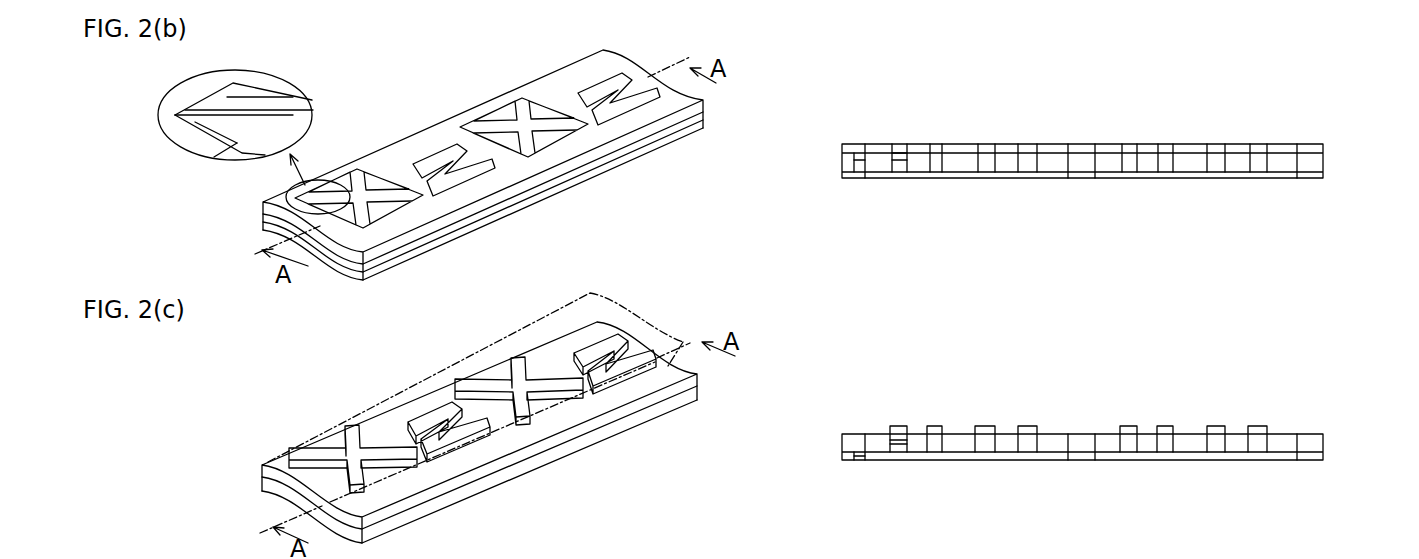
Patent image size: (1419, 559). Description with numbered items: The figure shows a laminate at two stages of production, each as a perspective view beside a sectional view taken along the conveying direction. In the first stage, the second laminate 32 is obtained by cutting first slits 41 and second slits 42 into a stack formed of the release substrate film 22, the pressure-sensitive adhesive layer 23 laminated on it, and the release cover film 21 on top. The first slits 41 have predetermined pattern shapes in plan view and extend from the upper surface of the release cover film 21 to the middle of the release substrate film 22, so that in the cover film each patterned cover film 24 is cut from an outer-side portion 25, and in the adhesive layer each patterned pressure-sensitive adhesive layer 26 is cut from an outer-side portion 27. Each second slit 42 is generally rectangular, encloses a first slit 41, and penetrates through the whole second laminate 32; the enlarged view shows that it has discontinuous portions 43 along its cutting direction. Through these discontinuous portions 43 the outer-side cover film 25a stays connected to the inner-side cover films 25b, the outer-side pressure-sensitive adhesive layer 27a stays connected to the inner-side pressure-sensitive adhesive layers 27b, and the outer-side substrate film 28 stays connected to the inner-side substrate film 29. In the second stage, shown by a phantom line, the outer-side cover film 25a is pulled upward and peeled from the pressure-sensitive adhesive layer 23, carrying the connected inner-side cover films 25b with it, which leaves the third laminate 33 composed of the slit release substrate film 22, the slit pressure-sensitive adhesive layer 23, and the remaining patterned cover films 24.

In FIG. 2B, the release cover film 21 is at (704, 101).
In FIG. 2B, the release substrate film 22 is at (704, 124).
In FIG. 2C, the release substrate film 22 is at (700, 394).
In FIG. 2B, the pressure-sensitive adhesive layer 23 is at (704, 115).
In FIG. 2C, the pressure-sensitive adhesive layer 23 is at (700, 378).
In FIG. 2B, the patterned cover film 24 is at (351, 222).
In FIG. 2C, the patterned cover film 24 is at (358, 425).
In FIG. 2B, the outer-side portion 25 is at (477, 122).
In FIG. 2C, the outer-side portion 25 is at (509, 381).
In FIG. 2B, the outer-side cover film 25a is at (458, 126).
In FIG. 2C, the outer-side cover film 25a is at (436, 425).
In FIG. 2B, the inner-side cover film 25b is at (530, 134).
In FIG. 2C, the inner-side cover film 25b is at (532, 398).
In FIG. 2B, the patterned pressure-sensitive adhesive layer 26 is at (905, 160).
In FIG. 2C, the patterned pressure-sensitive adhesive layer 26 is at (903, 445).
In FIG. 2B, the outer-side portion 27 is at (815, 229).
In FIG. 2C, the outer-side portion 27 is at (535, 423).
In FIG. 2B, the outer-side pressure-sensitive adhesive layer 27a is at (843, 162).
In FIG. 2C, the outer-side pressure-sensitive adhesive layer 27a is at (262, 487).
In FIG. 2B, the inner-side pressure-sensitive adhesive layer 27b is at (860, 162).
In FIG. 2C, the inner-side pressure-sensitive adhesive layer 27b is at (293, 503).
In FIG. 2B, the outer-side substrate film 28 is at (857, 165).
In FIG. 2C, the outer-side substrate film 28 is at (853, 456).
In FIG. 2B, the inner-side substrate film 29 is at (900, 165).
In FIG. 2C, the inner-side substrate film 29 is at (900, 455).
In FIG. 2B, the second laminate 32 is at (542, 260).
In FIG. 2C, the third laminate 33 is at (584, 538).
In FIG. 2B, the first slit 41 is at (290, 97).
In FIG. 2B, the second slit 42 is at (233, 85).
In FIG. 2C, the second slit 42 is at (866, 458).
In FIG. 2B, the discontinuous portion 43 is at (252, 78).